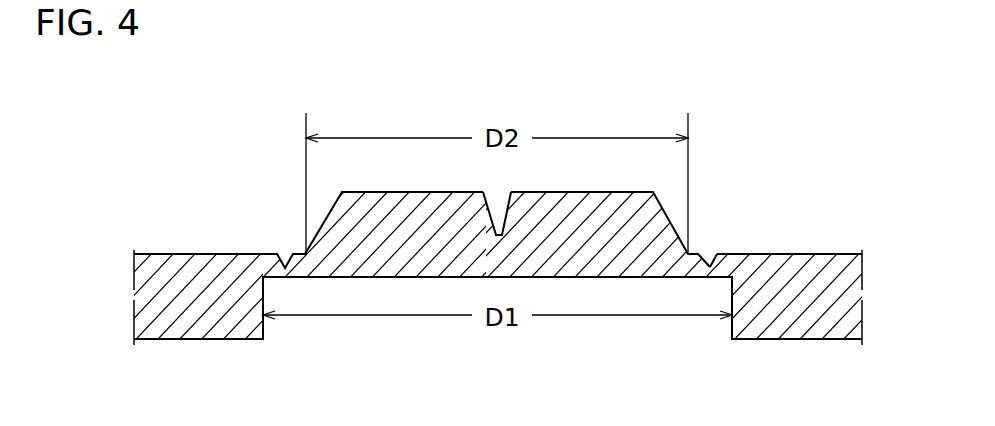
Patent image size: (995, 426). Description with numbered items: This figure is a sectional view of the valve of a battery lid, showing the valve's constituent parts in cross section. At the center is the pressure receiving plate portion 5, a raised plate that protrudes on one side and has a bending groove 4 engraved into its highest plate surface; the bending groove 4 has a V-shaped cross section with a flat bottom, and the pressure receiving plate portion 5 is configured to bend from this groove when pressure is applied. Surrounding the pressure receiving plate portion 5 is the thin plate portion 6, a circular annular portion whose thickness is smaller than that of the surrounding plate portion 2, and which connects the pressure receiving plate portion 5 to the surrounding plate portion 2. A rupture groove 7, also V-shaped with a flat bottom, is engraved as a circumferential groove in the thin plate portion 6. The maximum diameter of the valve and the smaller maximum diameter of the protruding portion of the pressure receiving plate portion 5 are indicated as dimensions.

The surrounding plate portion 2 is at (800, 272).
The bending groove 4 is at (502, 217).
The pressure receiving plate portion 5 is at (605, 210).
The thin plate portion 6 is at (693, 270).
The rupture groove 7 is at (717, 258).